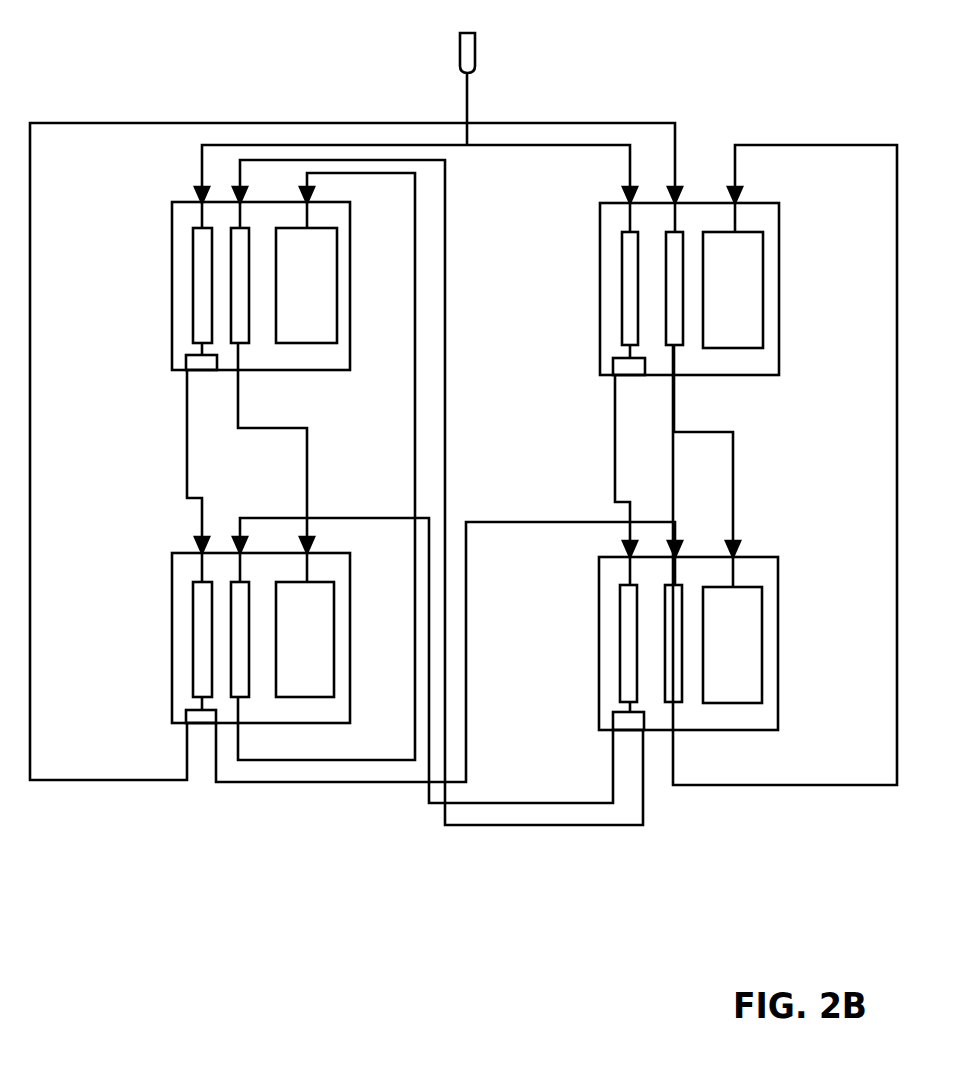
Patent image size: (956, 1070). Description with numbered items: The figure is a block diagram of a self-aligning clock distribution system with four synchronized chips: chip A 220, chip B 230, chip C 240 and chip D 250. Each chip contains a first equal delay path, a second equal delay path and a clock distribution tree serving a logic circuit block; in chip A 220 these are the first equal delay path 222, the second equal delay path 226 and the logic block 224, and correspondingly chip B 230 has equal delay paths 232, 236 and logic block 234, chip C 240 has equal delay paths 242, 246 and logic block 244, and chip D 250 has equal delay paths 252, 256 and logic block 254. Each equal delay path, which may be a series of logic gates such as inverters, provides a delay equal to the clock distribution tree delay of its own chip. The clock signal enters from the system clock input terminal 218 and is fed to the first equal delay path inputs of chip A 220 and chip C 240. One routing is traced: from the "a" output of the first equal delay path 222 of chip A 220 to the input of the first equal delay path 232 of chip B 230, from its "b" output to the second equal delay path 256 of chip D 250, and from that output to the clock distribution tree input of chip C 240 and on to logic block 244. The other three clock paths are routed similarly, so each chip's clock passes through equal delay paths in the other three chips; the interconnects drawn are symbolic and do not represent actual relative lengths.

The system clock input terminal 218 is at (477, 48).
The chip A 220 is at (171, 278).
The first equal delay path 222 is at (193, 245).
The logic circuit block 224 is at (337, 245).
The second equal delay path 226 is at (247, 340).
The chip B 230 is at (171, 632).
The first equal delay path 232 is at (193, 600).
The logic circuit block 234 is at (335, 598).
The second equal delay path 236 is at (247, 695).
The chip C 240 is at (599, 280).
The first equal delay path 242 is at (621, 245).
The logic circuit block 244 is at (765, 245).
The second equal delay path 246 is at (683, 333).
The chip D 250 is at (598, 633).
The first equal delay path 252 is at (620, 603).
The logic circuit block 254 is at (765, 600).
The second equal delay path 256 is at (683, 687).